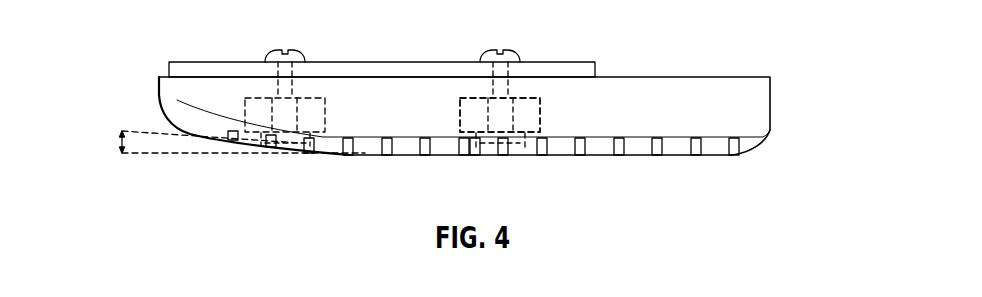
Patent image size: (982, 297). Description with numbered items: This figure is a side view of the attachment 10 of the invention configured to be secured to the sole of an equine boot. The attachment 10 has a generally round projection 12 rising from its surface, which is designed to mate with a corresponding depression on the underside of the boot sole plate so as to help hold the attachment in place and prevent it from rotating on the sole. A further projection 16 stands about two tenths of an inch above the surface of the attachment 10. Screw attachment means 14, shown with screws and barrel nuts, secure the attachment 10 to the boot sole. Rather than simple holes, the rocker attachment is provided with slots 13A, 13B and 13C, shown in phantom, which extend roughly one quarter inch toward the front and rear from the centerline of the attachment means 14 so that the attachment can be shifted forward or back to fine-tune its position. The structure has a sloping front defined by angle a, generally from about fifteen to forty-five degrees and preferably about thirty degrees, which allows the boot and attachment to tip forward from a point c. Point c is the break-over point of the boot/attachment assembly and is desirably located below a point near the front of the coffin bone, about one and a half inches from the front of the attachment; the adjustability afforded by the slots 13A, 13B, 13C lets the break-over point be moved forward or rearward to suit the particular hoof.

The attachment 10 is at (767, 138).
The projection 12 is at (745, 77).
The slot 13A is at (540, 115).
The slot 13B is at (500, 115).
The slot 13C is at (325, 99).
The attachment means 14 is at (278, 50).
The projection 16 is at (580, 62).
The angle a is at (118, 142).
The break-over point c is at (395, 153).